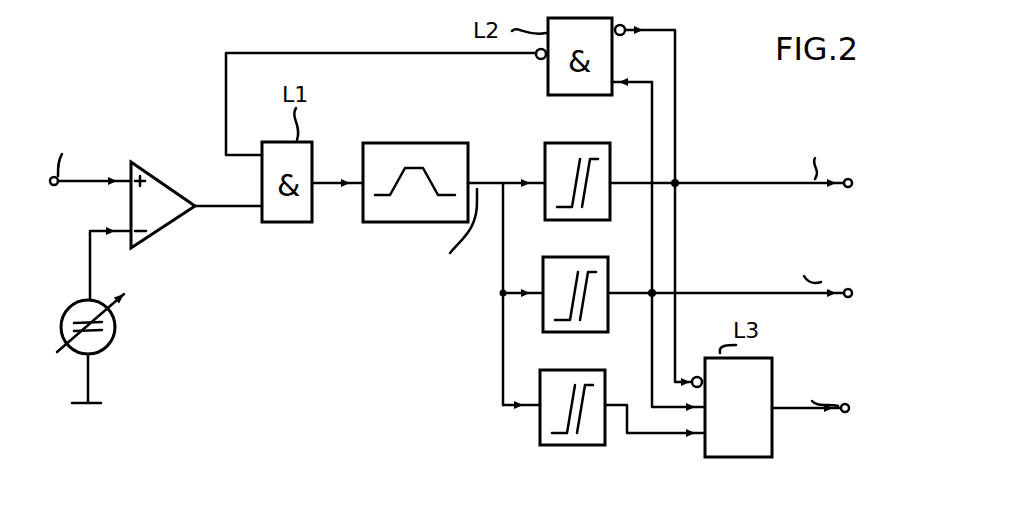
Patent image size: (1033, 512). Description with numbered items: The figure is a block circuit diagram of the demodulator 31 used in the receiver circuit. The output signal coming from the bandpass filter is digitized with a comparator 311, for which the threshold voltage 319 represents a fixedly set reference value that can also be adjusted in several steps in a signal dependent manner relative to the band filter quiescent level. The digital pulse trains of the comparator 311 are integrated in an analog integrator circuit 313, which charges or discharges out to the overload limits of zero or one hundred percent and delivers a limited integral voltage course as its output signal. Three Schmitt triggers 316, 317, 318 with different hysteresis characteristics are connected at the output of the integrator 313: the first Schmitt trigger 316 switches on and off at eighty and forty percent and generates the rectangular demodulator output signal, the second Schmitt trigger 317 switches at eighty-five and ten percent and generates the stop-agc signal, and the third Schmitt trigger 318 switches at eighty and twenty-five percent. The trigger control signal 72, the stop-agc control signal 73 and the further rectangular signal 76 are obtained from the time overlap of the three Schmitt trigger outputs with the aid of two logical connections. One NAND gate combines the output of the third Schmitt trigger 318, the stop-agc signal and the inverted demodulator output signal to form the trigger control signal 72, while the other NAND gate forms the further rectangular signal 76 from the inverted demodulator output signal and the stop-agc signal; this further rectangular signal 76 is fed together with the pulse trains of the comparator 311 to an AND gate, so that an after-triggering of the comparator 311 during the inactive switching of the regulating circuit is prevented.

The demodulator 31 is at (145, 88).
The further rectangular signal 76 is at (224, 69).
The comparator 311 is at (163, 233).
The analog integrator circuit 313 is at (403, 140).
The Schmitt trigger 316 is at (547, 146).
The Schmitt trigger 317 is at (553, 256).
The Schmitt trigger 318 is at (550, 369).
The threshold voltage 319 is at (112, 343).
The control signal D_tqr 72 is at (838, 421).
The control signal D_stop-agc 73 is at (843, 288).